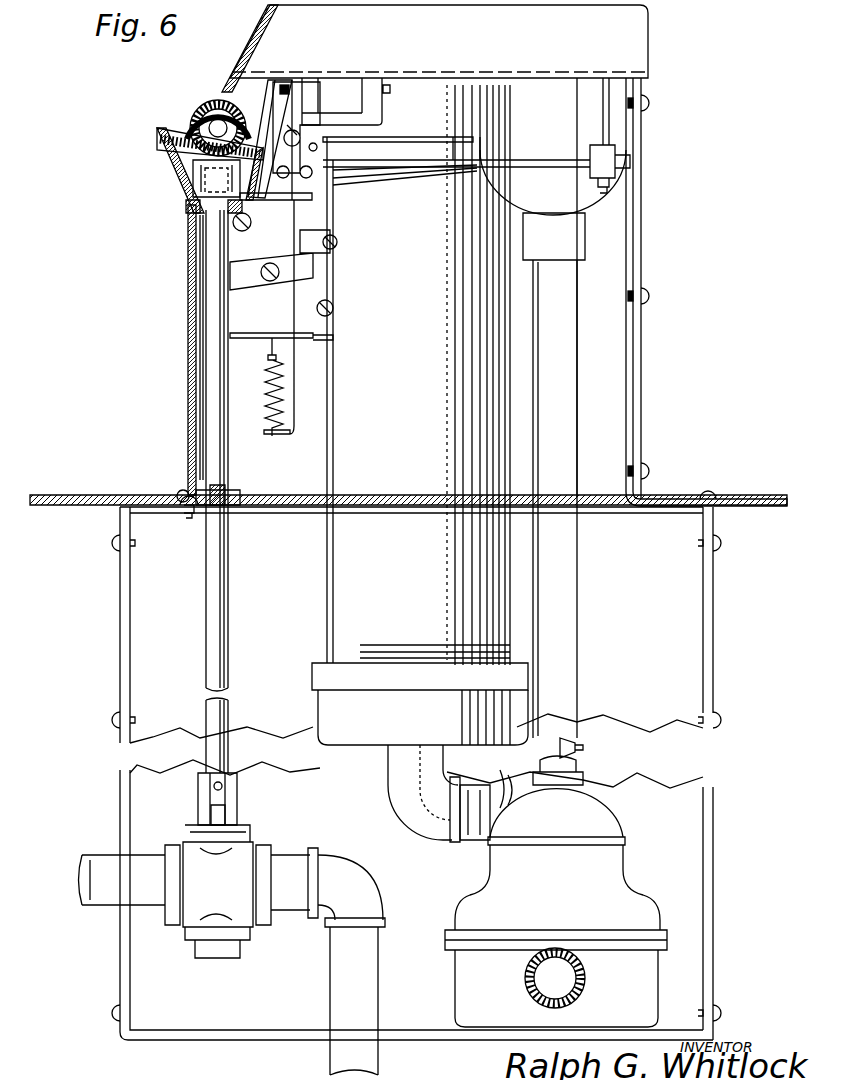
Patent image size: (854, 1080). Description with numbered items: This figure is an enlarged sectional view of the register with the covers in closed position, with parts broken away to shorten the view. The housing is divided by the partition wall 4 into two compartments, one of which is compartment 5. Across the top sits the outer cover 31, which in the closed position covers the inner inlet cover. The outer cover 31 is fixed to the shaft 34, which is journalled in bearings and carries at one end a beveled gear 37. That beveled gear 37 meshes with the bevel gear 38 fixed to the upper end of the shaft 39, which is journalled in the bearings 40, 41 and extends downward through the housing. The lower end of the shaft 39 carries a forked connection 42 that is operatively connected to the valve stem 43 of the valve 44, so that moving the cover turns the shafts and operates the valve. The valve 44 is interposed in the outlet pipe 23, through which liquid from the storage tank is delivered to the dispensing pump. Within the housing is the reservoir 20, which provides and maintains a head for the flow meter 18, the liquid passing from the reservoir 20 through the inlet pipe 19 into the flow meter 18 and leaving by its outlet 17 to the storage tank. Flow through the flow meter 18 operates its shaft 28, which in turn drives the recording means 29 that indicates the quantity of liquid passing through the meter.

The partition wall 4 is at (598, 301).
The compartment 5 is at (617, 370).
The outlet 17 is at (527, 988).
The flow meter 18 is at (462, 884).
The inlet pipe 19 is at (496, 782).
The reservoir 20 is at (392, 562).
The outlet pipe 23 is at (104, 868).
The shaft 28 is at (566, 744).
The recording means 29 is at (575, 118).
The outer cover 31 is at (612, 33).
The shaft 34 is at (208, 122).
The beveled gear 37 is at (222, 112).
The bevel gear 38 is at (182, 157).
The shaft 39 is at (216, 237).
The bearing 40 is at (186, 207).
The bearing 41 is at (186, 492).
The forked connection 42 is at (232, 800).
The valve stem 43 is at (212, 815).
The valve 44 is at (206, 885).